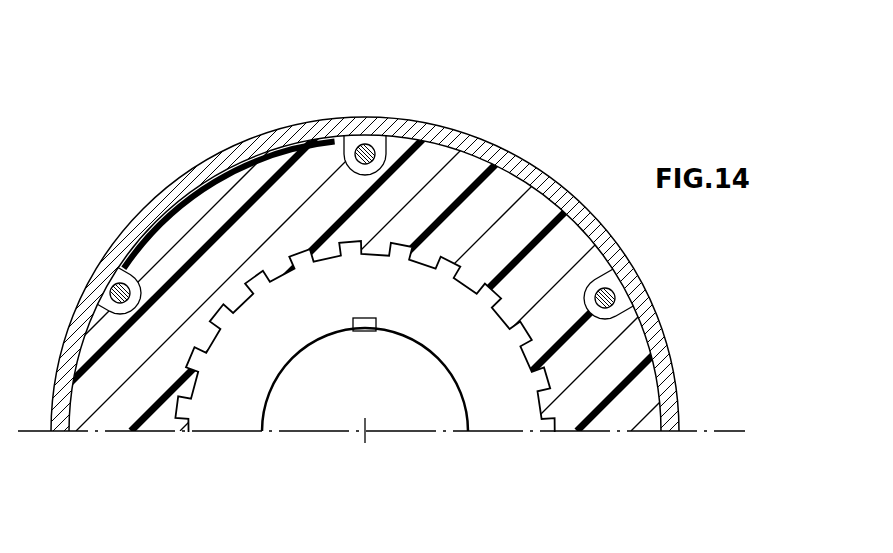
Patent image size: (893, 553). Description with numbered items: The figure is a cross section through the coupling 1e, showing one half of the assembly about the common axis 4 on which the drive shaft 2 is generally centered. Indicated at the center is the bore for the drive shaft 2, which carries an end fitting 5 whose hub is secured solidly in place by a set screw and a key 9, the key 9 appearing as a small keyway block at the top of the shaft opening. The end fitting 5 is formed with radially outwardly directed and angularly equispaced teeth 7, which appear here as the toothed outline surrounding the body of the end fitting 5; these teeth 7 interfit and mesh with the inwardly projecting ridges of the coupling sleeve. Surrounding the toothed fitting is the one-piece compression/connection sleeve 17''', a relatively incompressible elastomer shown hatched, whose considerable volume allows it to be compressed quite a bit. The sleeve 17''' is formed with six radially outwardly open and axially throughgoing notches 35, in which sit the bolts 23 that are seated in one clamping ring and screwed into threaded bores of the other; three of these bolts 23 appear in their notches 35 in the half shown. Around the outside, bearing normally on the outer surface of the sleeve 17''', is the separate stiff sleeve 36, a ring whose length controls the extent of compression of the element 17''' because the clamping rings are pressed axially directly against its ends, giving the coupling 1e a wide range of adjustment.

The coupling 1e is at (697, 344).
The drive shaft 2 is at (436, 415).
The common axis 4 is at (364, 424).
The end fitting 5 is at (233, 392).
The teeth 7 is at (300, 247).
The key 9 is at (362, 333).
The compression/connection sleeve 17''' is at (446, 245).
The bolts 23 is at (368, 142).
The notches 35 is at (101, 300).
The stiff sleeve 36 is at (434, 133).